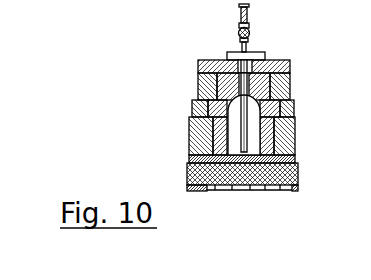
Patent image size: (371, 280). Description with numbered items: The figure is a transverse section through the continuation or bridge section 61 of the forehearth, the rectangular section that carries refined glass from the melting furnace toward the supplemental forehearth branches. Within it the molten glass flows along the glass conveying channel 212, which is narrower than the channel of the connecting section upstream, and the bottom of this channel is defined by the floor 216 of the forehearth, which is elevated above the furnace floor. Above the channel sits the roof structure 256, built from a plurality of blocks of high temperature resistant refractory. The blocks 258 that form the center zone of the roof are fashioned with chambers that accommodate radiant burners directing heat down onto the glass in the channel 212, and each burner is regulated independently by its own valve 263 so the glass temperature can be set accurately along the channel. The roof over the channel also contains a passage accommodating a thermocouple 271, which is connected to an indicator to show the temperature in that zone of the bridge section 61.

The valve 263 is at (250, 30).
The roof structure 256 is at (280, 61).
The blocks 258 is at (290, 85).
The glass conveying channel 212 is at (262, 129).
The thermocouple 271 is at (241, 129).
The bridge section 61 is at (252, 188).
The floor 216 is at (272, 190).